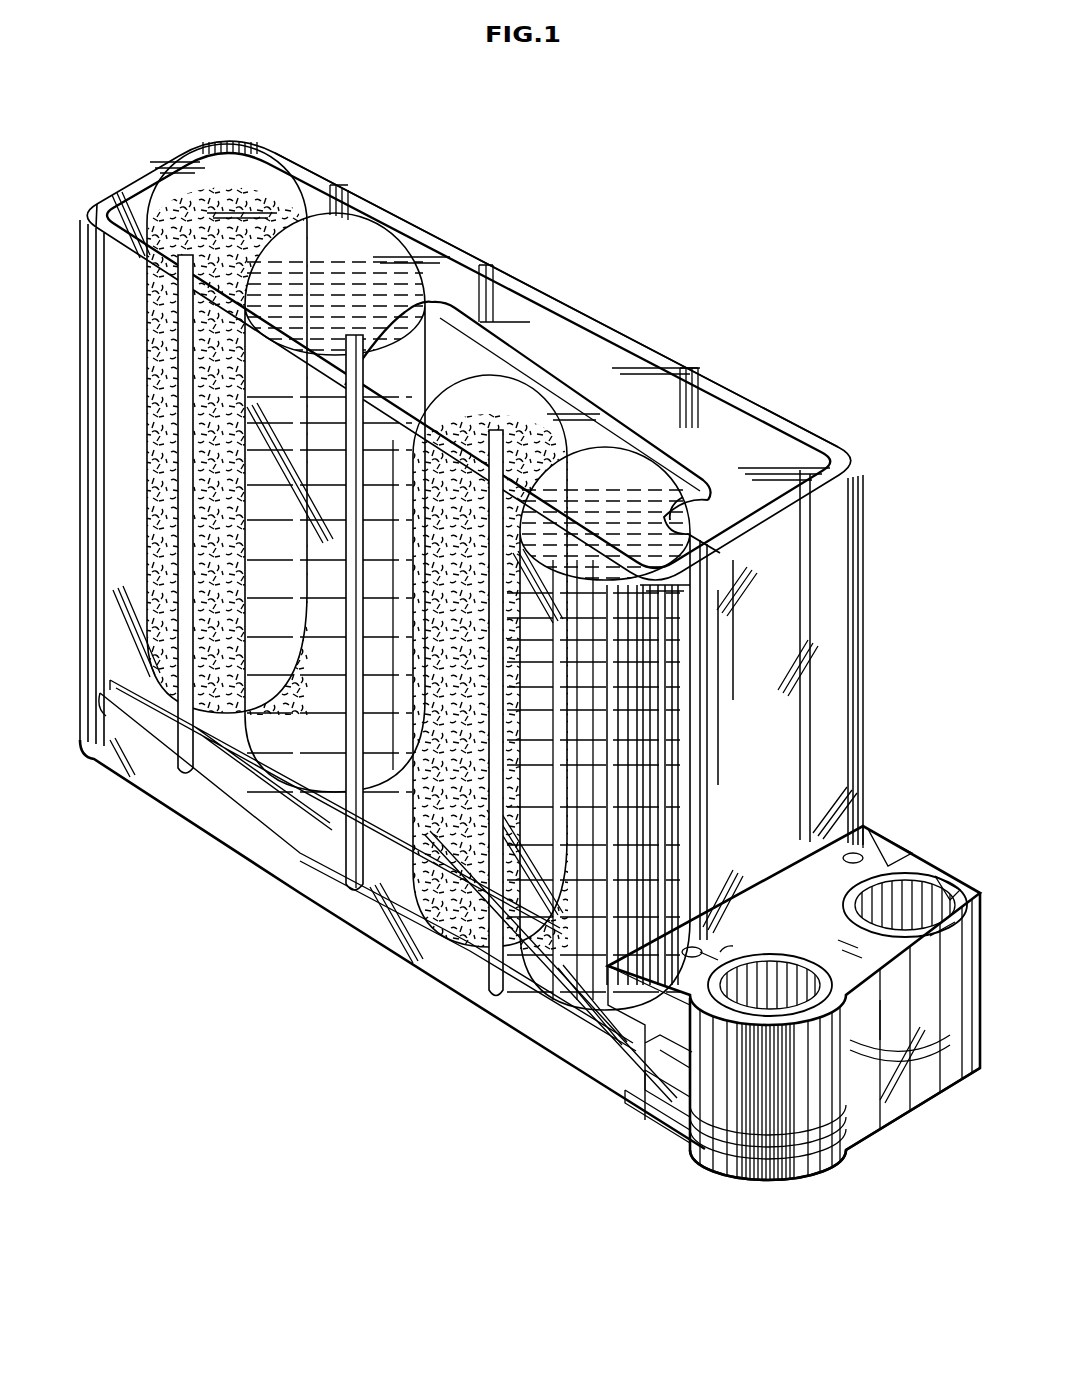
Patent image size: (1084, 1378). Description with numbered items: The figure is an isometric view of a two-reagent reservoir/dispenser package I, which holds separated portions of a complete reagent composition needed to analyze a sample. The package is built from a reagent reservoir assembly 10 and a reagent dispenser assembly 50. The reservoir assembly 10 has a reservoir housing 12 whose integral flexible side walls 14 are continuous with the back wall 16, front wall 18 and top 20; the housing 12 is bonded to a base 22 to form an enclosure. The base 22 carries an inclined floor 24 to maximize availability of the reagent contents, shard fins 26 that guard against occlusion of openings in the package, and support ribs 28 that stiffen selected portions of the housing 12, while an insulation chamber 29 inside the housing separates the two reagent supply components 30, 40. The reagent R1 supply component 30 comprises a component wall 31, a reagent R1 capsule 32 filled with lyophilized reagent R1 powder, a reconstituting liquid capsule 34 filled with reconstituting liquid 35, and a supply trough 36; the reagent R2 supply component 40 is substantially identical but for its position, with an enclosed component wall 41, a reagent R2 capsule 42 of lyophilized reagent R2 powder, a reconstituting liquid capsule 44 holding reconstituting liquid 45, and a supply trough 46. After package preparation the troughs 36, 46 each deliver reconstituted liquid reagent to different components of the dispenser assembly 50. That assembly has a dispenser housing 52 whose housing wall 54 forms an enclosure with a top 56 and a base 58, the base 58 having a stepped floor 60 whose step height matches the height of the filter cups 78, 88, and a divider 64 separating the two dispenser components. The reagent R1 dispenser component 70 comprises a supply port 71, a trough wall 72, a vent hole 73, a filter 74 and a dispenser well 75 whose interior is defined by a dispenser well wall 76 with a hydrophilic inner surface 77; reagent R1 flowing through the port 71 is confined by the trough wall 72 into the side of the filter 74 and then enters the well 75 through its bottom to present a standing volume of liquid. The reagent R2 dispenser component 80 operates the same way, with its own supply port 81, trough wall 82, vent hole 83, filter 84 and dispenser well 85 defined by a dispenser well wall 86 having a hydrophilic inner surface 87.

The reagent reservoir assembly 10 is at (153, 132).
The two-reagent reservoir/dispenser package I is at (672, 172).
The reservoir housing 12 is at (238, 128).
The flexible side walls 14 is at (455, 233).
The back wall 16 is at (78, 250).
The front wall 18 is at (853, 540).
The top 20 is at (625, 348).
The base 22 is at (165, 788).
The inclined floor 24 is at (296, 818).
The shard fins 26 is at (470, 945).
The support ribs 28 is at (345, 880).
The insulation chamber 29 is at (488, 361).
The reagent R1 supply component 30 is at (672, 500).
The component wall 31 is at (660, 462).
The reagent R1 capsule 32 is at (525, 406).
The reconstituting liquid capsule 34 is at (612, 460).
The reconstituting liquid 35 is at (541, 841).
The supply trough 36 is at (660, 1100).
The reagent R2 supply component 40 is at (302, 182).
The enclosed component wall 41 is at (538, 350).
The reagent R2 capsule 42 is at (272, 178).
The reconstituting liquid capsule 44 is at (372, 232).
The reconstituting liquid 45 is at (284, 552).
The supply trough 46 is at (905, 828).
The reagent dispenser assembly 50 is at (947, 765).
The dispenser housing 52 is at (840, 1170).
The housing wall 54 is at (815, 1170).
The top 56 is at (888, 1030).
The base 58 is at (740, 1180).
The stepped floor 60 is at (690, 1130).
The divider 64 is at (768, 880).
The reagent R1 dispenser component 70 is at (665, 1140).
The supply port 71 is at (690, 1068).
The trough wall 72 is at (632, 1030).
The vent hole 73 is at (668, 962).
The filter 74 is at (720, 1130).
The dispenser well 75 is at (770, 985).
The dispenser well wall 76 is at (738, 965).
The hydrophilic inner surface 77 is at (770, 987).
The filter cup 78 is at (820, 1135).
The reagent R2 dispenser component 80 is at (917, 850).
The supply port 81 is at (830, 955).
The trough wall 82 is at (885, 832).
The vent hole 83 is at (848, 860).
The filter 84 is at (947, 1060).
The dispenser well 85 is at (953, 880).
The dispenser well wall 86 is at (940, 942).
The hydrophilic inner surface 87 is at (897, 916).
The filter cup 88 is at (930, 1105).
The reagent R1 is at (420, 830).
The reagent R2 is at (165, 455).